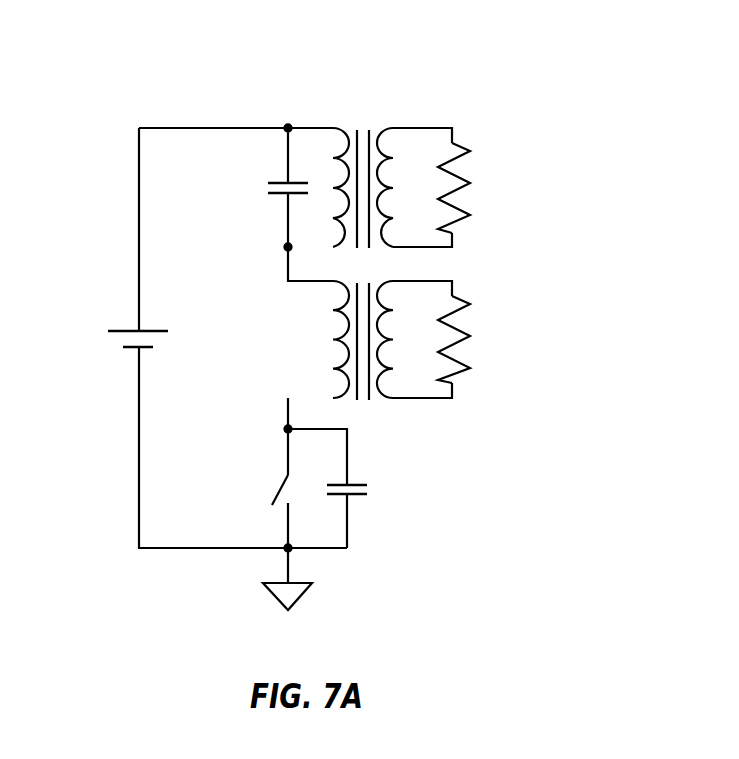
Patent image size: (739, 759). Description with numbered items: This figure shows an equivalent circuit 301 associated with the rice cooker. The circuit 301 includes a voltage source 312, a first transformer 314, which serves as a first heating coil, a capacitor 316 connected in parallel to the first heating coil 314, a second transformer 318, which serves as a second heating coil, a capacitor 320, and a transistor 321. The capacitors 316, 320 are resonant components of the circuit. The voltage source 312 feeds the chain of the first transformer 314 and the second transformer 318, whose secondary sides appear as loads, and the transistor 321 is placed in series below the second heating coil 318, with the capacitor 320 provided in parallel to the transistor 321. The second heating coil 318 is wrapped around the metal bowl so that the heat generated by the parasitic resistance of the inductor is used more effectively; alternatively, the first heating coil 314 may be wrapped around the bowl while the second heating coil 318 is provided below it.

The equivalent circuit 301 is at (497, 70).
The voltage source 312 is at (127, 330).
The first transformer 314 is at (365, 116).
The capacitor 316 is at (282, 182).
The second transformer 318 is at (377, 435).
The capacitor 320 is at (358, 498).
The transistor 321 is at (280, 487).